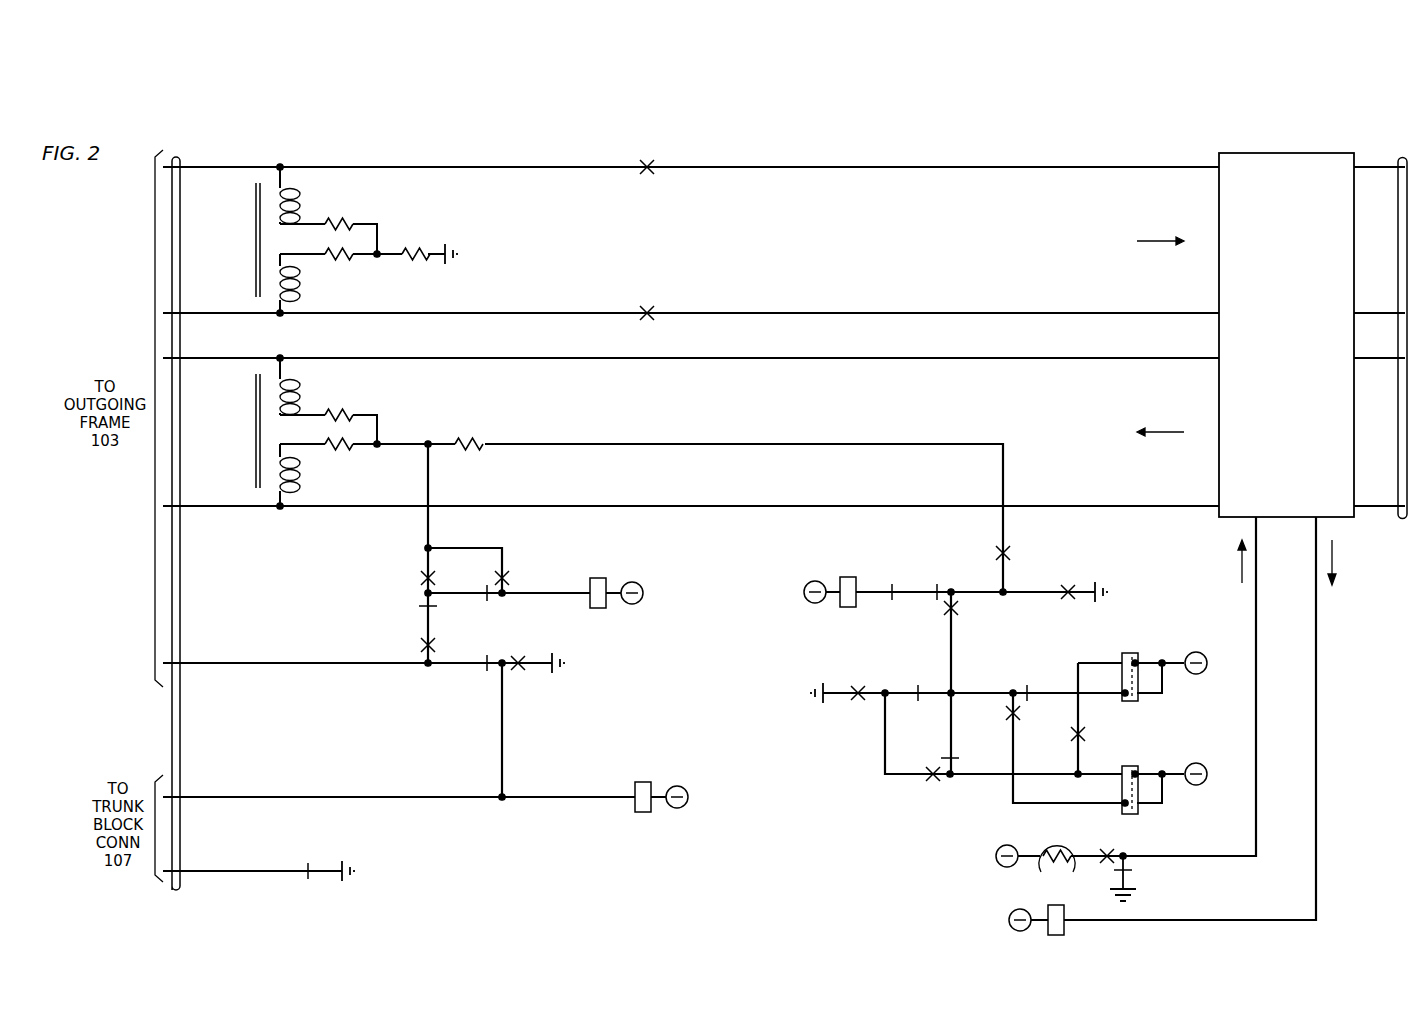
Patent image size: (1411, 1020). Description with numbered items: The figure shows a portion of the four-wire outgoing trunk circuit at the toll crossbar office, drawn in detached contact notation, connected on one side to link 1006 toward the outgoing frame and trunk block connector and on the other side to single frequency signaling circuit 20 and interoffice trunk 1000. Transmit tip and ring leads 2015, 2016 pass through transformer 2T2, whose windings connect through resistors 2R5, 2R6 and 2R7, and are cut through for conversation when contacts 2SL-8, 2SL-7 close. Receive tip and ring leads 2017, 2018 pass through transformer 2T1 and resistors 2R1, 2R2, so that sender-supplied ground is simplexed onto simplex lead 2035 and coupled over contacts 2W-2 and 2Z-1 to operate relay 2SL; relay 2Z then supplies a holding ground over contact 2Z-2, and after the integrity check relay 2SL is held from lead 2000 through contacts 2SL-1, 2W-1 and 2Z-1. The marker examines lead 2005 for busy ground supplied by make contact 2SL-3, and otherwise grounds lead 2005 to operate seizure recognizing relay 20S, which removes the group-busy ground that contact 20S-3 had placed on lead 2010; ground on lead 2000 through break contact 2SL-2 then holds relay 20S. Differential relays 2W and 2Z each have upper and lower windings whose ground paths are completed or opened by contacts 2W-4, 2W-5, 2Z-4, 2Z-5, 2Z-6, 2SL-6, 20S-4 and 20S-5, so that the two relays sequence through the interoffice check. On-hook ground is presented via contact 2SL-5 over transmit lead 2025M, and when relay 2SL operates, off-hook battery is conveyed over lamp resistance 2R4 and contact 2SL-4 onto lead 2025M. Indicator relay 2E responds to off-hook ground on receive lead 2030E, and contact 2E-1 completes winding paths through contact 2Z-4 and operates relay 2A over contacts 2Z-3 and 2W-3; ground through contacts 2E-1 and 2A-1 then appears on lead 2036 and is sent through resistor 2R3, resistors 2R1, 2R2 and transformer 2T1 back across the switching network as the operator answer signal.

The single frequency signaling circuit 20 is at (1293, 156).
The interoffice trunk 1000 is at (1402, 525).
The link 1006 is at (178, 895).
The transmit tip lead 2015 is at (246, 165).
The transmit ring lead 2016 is at (253, 312).
The receive tip lead 2017 is at (253, 357).
The receive ring lead 2018 is at (240, 505).
The lead 2000 is at (244, 661).
The lead 2005 is at (244, 796).
The lead 2010 is at (242, 869).
The simplex lead 2035 is at (425, 517).
The lead 2036 is at (748, 443).
The transmit lead 2025M is at (1254, 618).
The receive lead 2030E is at (1318, 622).
The transformer 2T1 is at (254, 417).
The transformer 2T2 is at (254, 229).
The resistor 2R1 is at (338, 410).
The resistor 2R2 is at (345, 447).
The resistor 2R3 is at (469, 442).
The lamp resistance 2R4 is at (1047, 840).
The resistor 2R5 is at (338, 220).
The resistor 2R6 is at (345, 258).
The resistor 2R7 is at (414, 250).
The relay 2SL is at (598, 579).
The contact 2SL-1 is at (421, 646).
The break contact 2SL-2 is at (484, 670).
The make contact 2SL-3 is at (520, 672).
The contact 2SL-4 is at (1109, 850).
The contact 2SL-5 is at (1133, 870).
The break contact 2SL-6 is at (918, 685).
The contact 2SL-7 is at (649, 307).
The contact 2SL-8 is at (649, 160).
The differential relay 2W is at (1139, 768).
The contact 2W-1 is at (420, 604).
The contact 2W-2 is at (420, 578).
The contact 2W-3 is at (890, 603).
The contact 2W-4 is at (948, 756).
The contact 2W-5 is at (934, 781).
The differential relay 2Z is at (1131, 652).
The contact 2Z-1 is at (489, 599).
The contact 2Z-2 is at (510, 580).
The contact 2Z-3 is at (935, 585).
The contact 2Z-4 is at (958, 614).
The contact 2Z-5 is at (1027, 685).
The make contact 2Z-6 is at (1008, 715).
The relay 2A is at (846, 576).
The contact 2A-1 is at (1011, 553).
The indicator relay 2E is at (1036, 910).
The contact 2E-1 is at (1070, 604).
The seizure recognizing relay 20S is at (645, 782).
The contact 20S-3 is at (311, 866).
The make contact 20S-4 is at (1087, 737).
The make contact 20S-5 is at (858, 702).